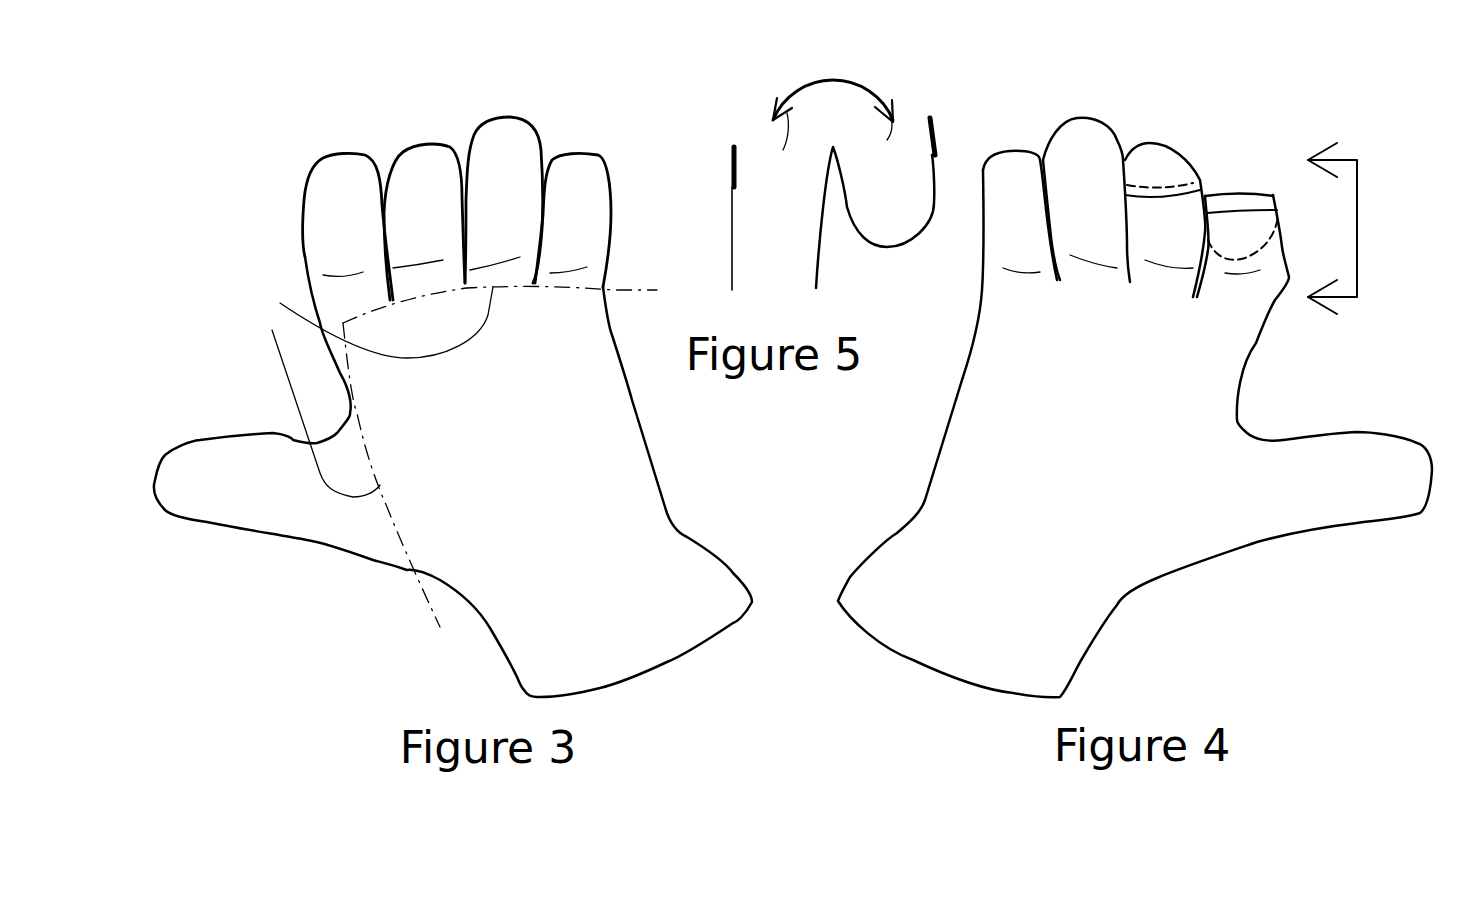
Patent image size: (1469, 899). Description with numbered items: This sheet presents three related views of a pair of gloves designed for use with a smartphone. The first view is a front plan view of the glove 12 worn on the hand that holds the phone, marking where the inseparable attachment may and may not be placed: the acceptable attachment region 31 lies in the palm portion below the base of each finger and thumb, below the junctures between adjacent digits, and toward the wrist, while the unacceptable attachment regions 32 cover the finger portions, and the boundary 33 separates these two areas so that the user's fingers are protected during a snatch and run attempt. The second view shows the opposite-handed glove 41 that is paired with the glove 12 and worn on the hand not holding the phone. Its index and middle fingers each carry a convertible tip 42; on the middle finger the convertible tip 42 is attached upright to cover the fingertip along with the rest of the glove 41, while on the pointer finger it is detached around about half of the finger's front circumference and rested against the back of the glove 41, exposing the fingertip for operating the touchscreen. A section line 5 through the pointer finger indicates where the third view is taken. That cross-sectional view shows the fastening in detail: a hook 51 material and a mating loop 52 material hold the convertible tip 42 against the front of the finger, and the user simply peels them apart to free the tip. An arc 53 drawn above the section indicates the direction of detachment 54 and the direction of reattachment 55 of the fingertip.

In FIG. 3, the glove 12 is at (358, 626).
In FIG. 3, the acceptable attachment region 31 is at (525, 462).
In FIG. 3, the unacceptable attachment regions 32 is at (573, 207).
In FIG. 3, the boundary 33 is at (360, 457).
In FIG. 4, the opposite-handed glove 41 is at (1235, 635).
In FIG. 5, the convertible tip 42 is at (876, 185).
In FIG. 4, the convertible tip 42 is at (1150, 160).
In FIG. 4, the section line 5- 5 is at (1320, 228).
In FIG. 5, the hook material 51 is at (725, 160).
In FIG. 5, the loop material 52 is at (928, 142).
In FIG. 5, the arc 53 is at (823, 81).
In FIG. 5, the direction of detachment 54 is at (872, 142).
In FIG. 5, the direction of reattachment 55 is at (776, 150).